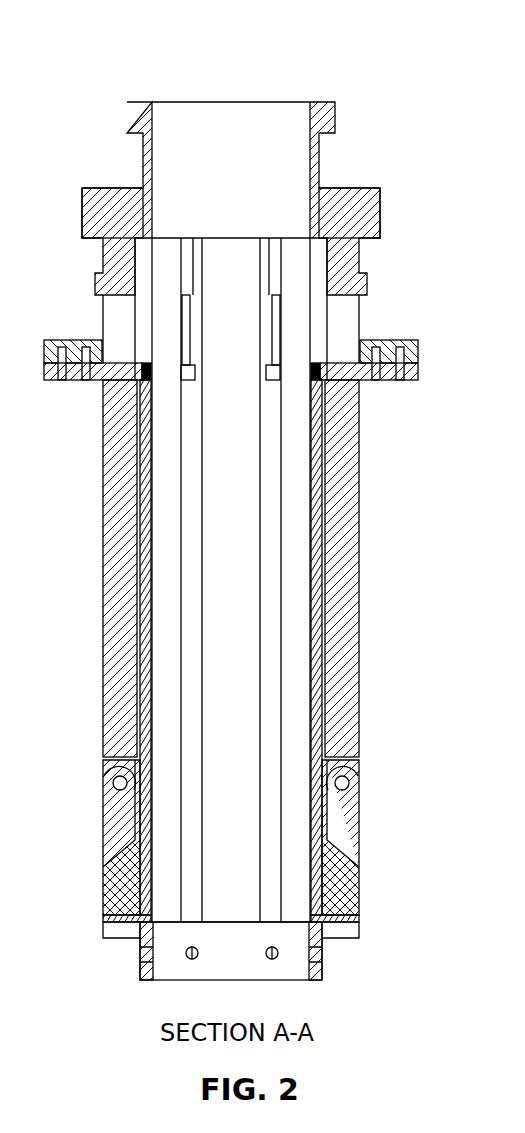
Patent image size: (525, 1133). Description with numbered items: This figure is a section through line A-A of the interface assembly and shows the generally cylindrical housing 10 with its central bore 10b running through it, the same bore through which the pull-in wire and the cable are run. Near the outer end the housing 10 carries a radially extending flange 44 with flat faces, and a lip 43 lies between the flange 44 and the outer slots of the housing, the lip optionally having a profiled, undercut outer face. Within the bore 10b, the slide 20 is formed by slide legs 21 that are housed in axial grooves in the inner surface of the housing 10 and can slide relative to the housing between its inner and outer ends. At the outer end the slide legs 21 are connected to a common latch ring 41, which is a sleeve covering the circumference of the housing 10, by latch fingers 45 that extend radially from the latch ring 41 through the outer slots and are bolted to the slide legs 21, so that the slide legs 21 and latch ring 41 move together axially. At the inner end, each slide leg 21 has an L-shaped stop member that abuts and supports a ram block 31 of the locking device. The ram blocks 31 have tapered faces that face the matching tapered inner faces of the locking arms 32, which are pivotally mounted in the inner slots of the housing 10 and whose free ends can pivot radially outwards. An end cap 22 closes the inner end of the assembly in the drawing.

The housing 10 is at (360, 543).
The bore 10b is at (248, 152).
The slide 20 is at (322, 455).
The slide leg 21 is at (322, 665).
The bottom cap 22 is at (150, 893).
The ram block 31 is at (343, 893).
The locking arm 32 is at (345, 815).
The latch ring 41 is at (73, 340).
The lip 43 is at (368, 290).
The flange 44 is at (112, 208).
The latch finger 45 is at (102, 378).